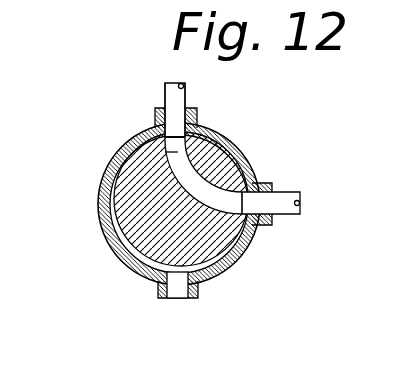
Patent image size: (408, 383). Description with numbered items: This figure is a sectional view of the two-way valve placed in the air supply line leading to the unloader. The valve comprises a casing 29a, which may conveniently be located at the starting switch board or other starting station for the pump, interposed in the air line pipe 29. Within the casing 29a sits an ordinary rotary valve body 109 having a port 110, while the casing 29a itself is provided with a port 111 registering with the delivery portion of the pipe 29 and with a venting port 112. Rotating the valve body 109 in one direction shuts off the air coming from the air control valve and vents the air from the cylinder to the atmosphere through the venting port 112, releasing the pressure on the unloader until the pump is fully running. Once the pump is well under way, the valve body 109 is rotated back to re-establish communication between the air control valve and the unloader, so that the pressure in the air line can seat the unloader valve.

The air line pipe 29 is at (187, 86).
The casing 29a is at (104, 216).
The rotary valve body 109 is at (135, 230).
The port 110 is at (180, 153).
The port 111 is at (258, 184).
The venting port 112 is at (181, 291).